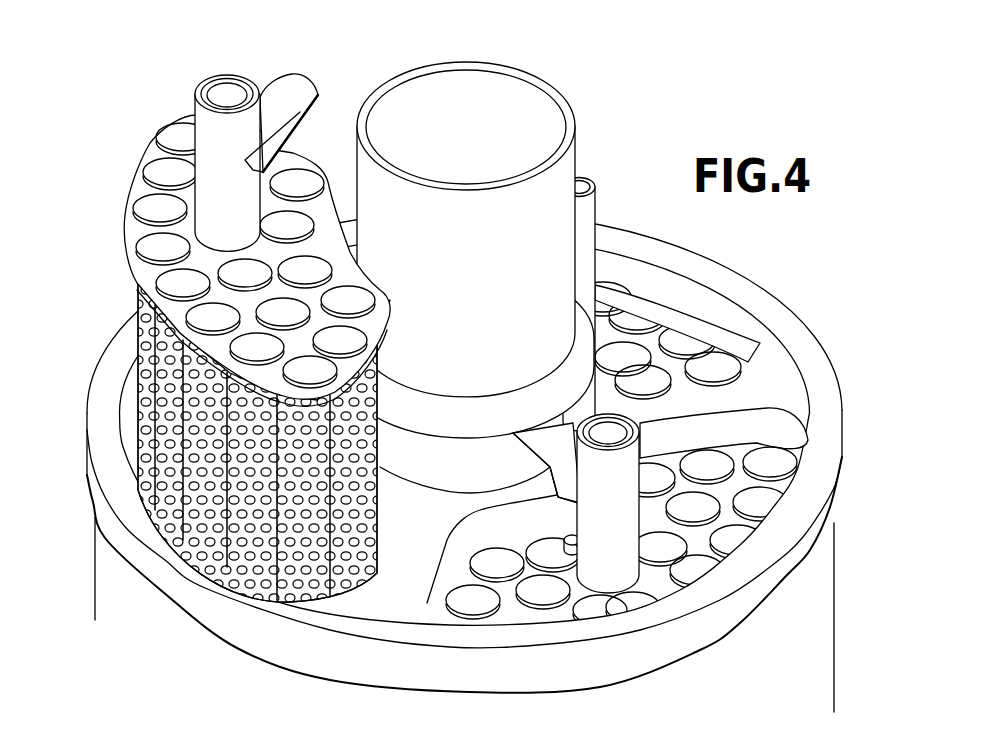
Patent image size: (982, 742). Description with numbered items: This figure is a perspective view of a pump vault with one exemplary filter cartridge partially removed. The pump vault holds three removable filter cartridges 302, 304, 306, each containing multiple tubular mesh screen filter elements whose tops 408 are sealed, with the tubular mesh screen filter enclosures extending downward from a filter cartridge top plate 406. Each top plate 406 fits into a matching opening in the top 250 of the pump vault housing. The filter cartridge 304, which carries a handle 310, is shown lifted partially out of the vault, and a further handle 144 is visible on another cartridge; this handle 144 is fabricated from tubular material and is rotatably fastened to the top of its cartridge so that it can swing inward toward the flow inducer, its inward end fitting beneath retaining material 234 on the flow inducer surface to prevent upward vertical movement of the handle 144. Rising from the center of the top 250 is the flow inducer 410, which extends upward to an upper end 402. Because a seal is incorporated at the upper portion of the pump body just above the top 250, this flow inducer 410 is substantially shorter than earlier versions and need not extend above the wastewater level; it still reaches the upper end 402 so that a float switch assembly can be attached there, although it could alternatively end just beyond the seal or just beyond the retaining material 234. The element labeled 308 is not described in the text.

The handle 144 is at (598, 201).
The retaining material 234 is at (468, 420).
The top of the pump vault housing 250 is at (806, 350).
The removable filter cartridge 302 is at (588, 594).
The removable filter cartridge 304 is at (138, 187).
The removable filter cartridge 306 is at (673, 316).
The tube post 308 is at (614, 412).
The handle 310 is at (228, 76).
The upper end 402 is at (466, 62).
The filter cartridge top plate 406 is at (122, 242).
The tops of the filter elements 408 is at (159, 252).
The flow inducer 410 is at (424, 478).